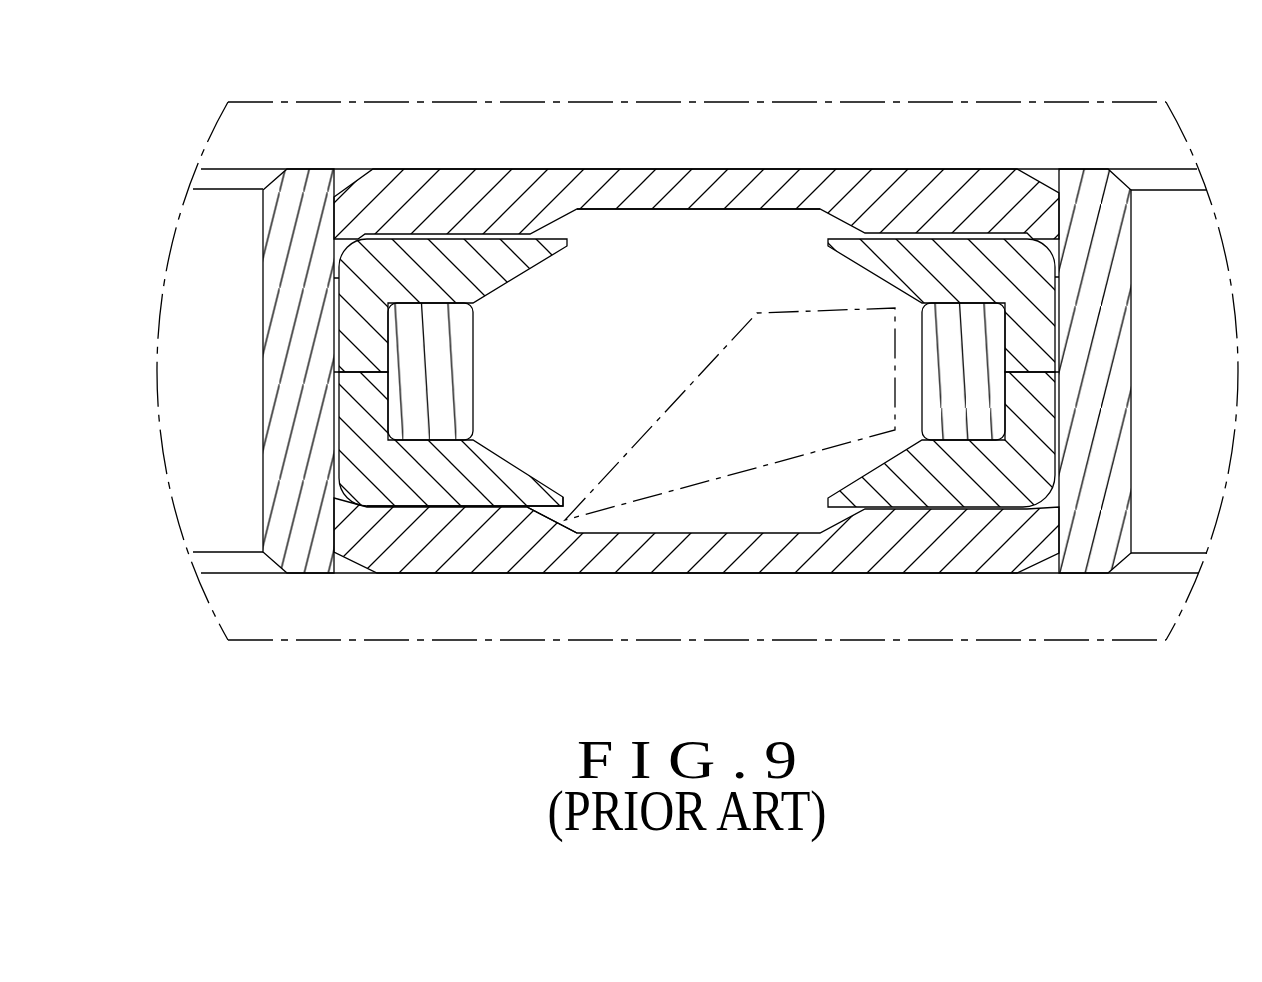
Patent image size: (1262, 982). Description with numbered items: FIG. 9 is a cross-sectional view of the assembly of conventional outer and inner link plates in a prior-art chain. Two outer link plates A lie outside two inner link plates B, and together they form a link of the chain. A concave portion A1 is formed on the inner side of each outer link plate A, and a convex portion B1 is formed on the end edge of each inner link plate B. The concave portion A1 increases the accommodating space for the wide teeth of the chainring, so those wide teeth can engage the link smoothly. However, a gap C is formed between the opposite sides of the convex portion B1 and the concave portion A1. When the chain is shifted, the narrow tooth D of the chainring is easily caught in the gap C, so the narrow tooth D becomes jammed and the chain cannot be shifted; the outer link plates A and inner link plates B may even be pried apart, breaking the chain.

The outer link plate A is at (760, 195).
The concave portion A1 is at (678, 209).
The inner link plate B is at (362, 327).
The convex portion B1 is at (515, 510).
The gap C is at (560, 515).
The narrow tooth D is at (730, 432).